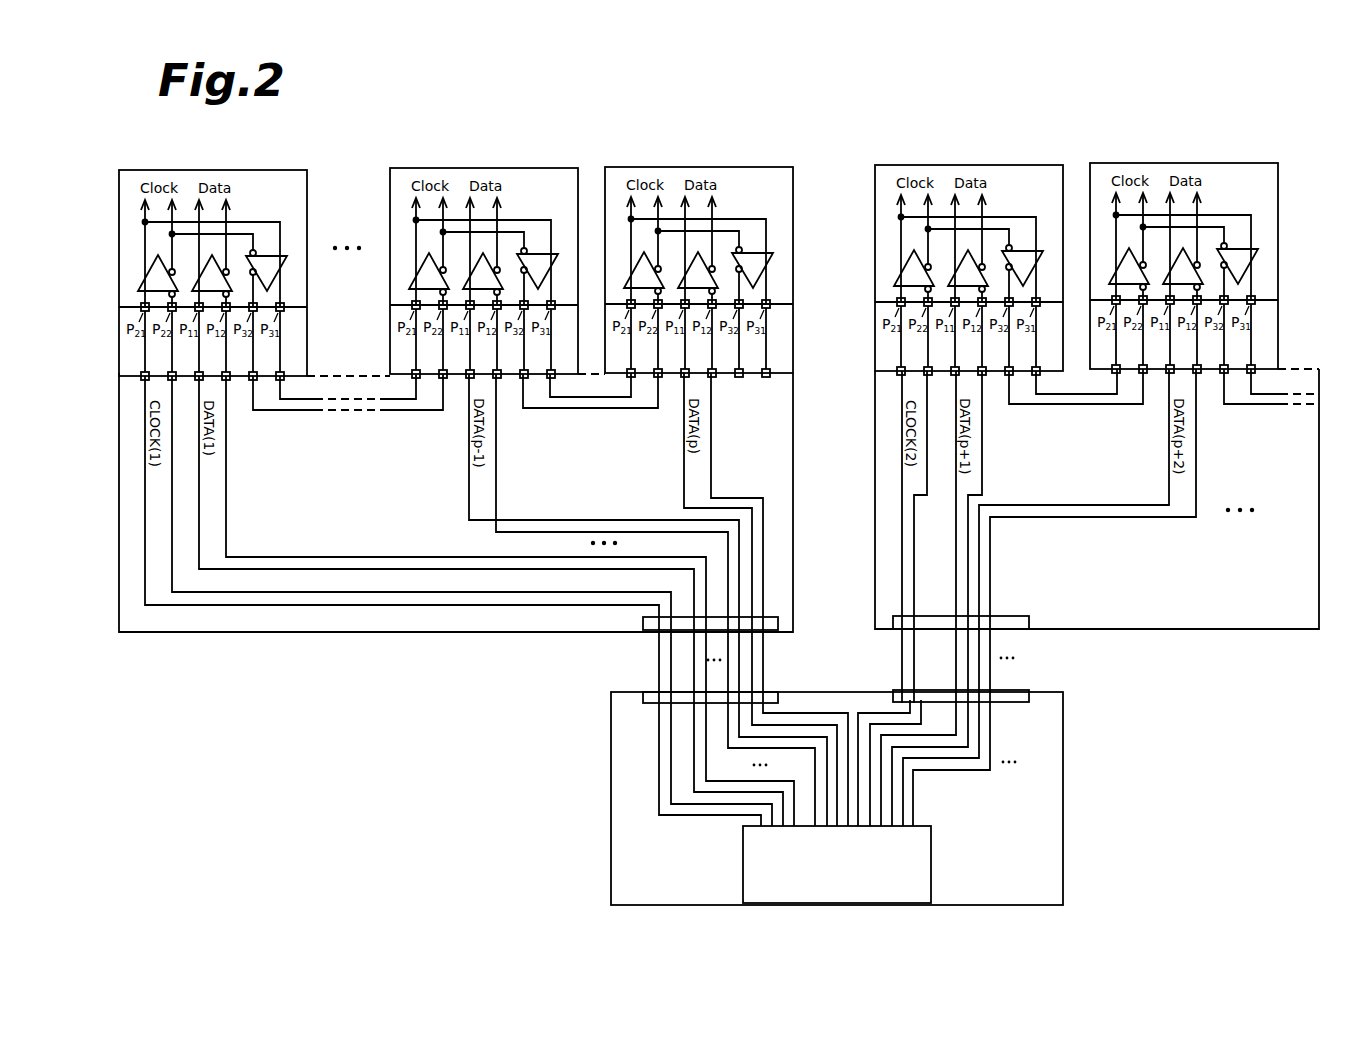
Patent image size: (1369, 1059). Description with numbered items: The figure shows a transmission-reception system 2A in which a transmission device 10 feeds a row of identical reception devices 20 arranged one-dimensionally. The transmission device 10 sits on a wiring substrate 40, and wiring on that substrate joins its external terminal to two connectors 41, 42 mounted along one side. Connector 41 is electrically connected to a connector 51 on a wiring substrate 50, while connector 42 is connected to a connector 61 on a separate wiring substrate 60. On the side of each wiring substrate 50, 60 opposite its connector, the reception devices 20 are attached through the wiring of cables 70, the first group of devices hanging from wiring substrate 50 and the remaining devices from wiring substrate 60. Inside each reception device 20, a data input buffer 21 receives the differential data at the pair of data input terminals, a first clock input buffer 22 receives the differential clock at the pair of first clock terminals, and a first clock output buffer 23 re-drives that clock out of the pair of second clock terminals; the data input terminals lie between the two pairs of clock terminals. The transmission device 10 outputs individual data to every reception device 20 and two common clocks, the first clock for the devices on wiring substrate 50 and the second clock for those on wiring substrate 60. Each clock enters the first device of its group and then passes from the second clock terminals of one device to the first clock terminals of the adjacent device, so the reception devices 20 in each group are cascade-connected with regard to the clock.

The transmission-reception system 2A is at (288, 778).
The transmission device 10 is at (922, 874).
The reception device 20 is at (297, 155).
The data input buffer 21 is at (197, 282).
The first clock input buffer 22 is at (142, 282).
The first clock output buffer 23 is at (287, 264).
The wiring substrate 40 is at (634, 842).
The connector 41 is at (653, 701).
The connector 42 is at (1015, 699).
The wiring substrate 50 is at (185, 627).
The connector 51 is at (653, 628).
The wiring substrate 60 is at (1273, 629).
The connector 61 is at (1015, 628).
The cable 70 is at (300, 321).